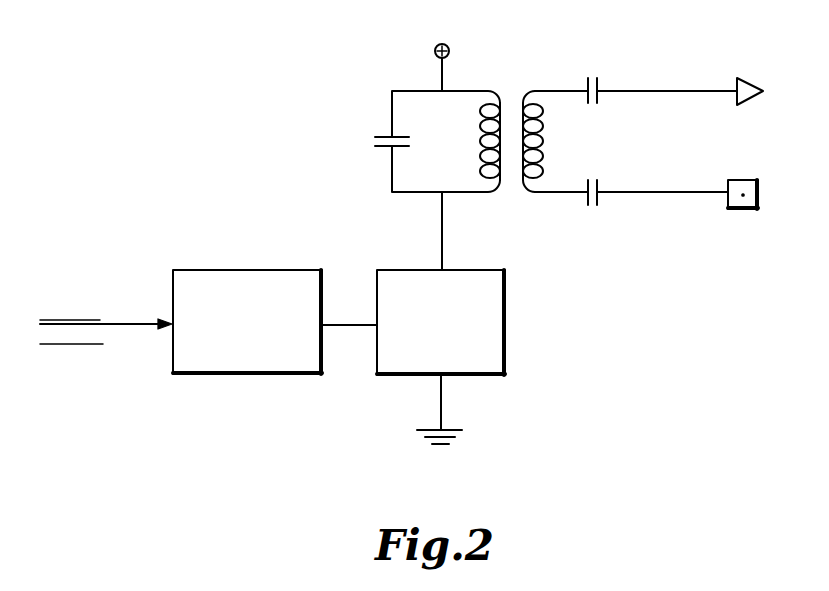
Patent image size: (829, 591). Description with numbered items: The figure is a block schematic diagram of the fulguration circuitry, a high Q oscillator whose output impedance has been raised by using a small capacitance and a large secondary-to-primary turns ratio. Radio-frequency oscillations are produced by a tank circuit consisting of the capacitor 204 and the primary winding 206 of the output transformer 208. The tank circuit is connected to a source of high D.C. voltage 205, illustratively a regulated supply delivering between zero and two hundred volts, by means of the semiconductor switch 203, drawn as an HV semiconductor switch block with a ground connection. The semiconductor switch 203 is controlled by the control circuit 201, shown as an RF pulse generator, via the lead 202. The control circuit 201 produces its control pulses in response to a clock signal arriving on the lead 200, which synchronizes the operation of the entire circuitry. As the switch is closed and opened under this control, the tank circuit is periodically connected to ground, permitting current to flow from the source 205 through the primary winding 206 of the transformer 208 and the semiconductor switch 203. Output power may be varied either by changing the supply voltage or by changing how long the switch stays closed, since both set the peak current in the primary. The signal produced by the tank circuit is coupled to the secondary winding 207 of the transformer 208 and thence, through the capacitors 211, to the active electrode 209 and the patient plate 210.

The lead 200 is at (137, 325).
The control circuit 201 is at (252, 270).
The lead 202 is at (366, 322).
The semiconductor switch 203 is at (468, 270).
The capacitor 204 is at (382, 138).
The source of high D.C. voltage 205 is at (448, 52).
The primary winding 206 is at (480, 144).
The secondary winding 207 is at (543, 143).
The output transformer 208 is at (512, 154).
The active electrode 209 is at (747, 78).
The patient plate 210 is at (743, 179).
The capacitors 211 is at (598, 97).